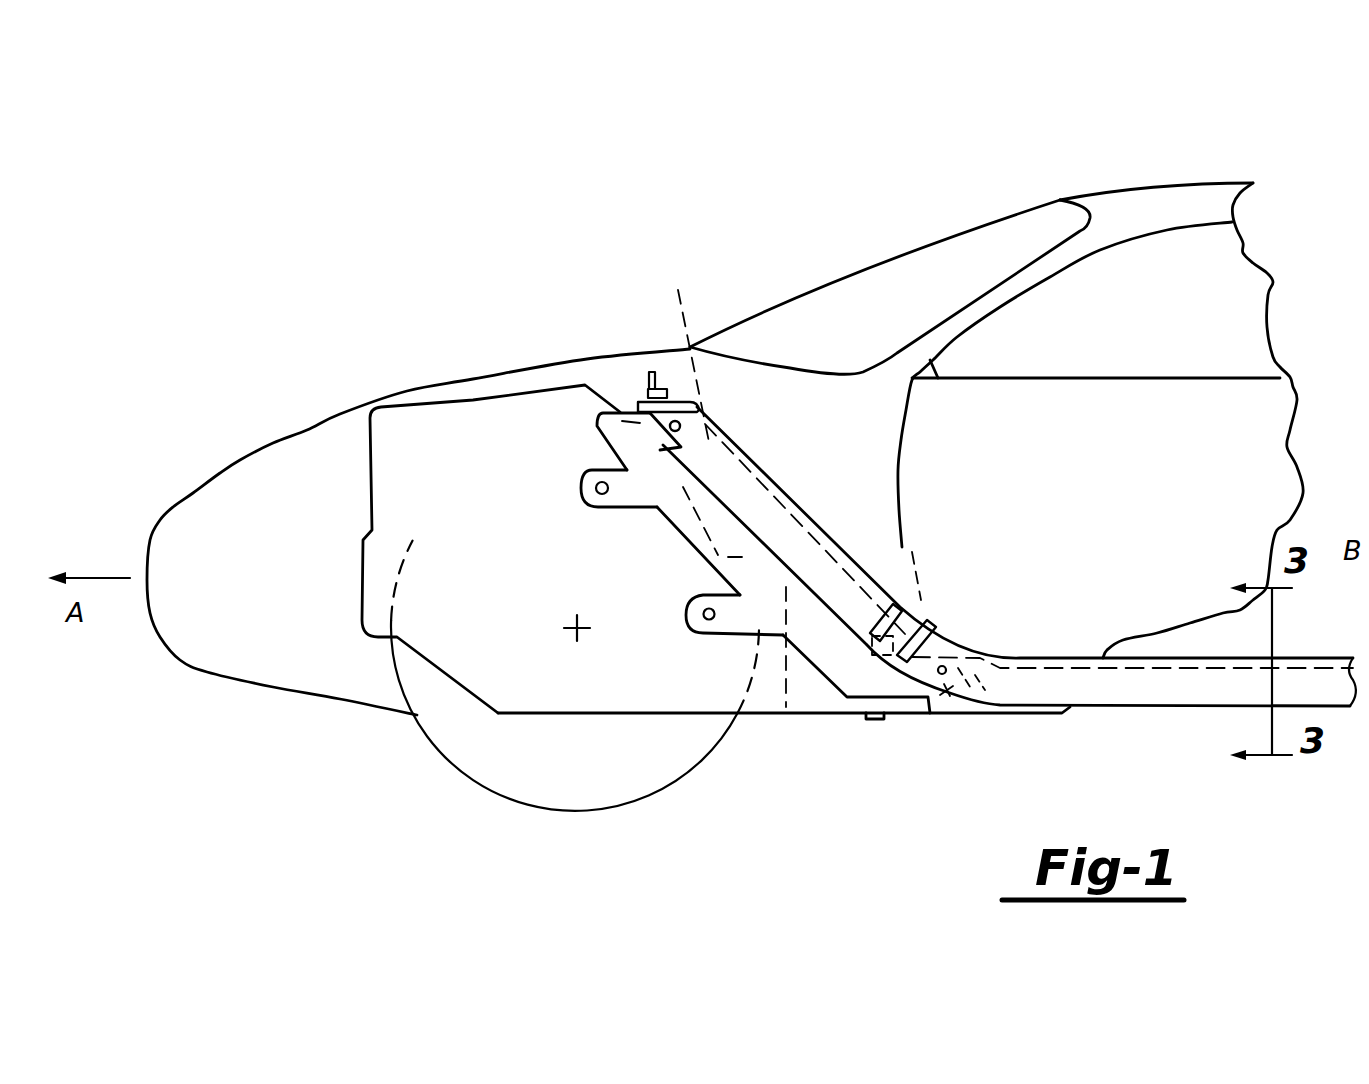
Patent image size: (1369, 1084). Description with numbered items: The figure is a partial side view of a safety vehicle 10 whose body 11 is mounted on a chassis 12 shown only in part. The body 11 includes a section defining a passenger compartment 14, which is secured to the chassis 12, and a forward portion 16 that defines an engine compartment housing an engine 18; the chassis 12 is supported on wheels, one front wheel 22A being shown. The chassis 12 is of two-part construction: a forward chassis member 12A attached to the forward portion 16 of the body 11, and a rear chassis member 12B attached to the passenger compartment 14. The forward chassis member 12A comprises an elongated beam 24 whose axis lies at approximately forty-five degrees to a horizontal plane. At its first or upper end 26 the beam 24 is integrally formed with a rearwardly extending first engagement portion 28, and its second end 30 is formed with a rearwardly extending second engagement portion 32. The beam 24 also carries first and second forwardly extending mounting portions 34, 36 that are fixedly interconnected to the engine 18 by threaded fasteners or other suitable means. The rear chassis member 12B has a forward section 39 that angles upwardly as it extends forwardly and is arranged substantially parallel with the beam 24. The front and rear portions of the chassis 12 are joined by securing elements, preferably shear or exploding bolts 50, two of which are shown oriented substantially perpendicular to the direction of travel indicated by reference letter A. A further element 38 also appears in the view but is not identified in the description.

The safety vehicle 10 is at (262, 308).
The body 11 is at (1156, 160).
The chassis 12 is at (1073, 718).
The forward chassis member 12A is at (818, 680).
The rear chassis member 12B is at (1023, 658).
The passenger compartment 14 is at (1196, 615).
The forward portion 16 is at (212, 518).
The engine 18 is at (436, 427).
The front wheel 22A is at (597, 797).
The elongated beam 24 is at (681, 537).
The first end 26 is at (621, 410).
The first engagement portion 28 is at (696, 351).
The second end 30 is at (928, 699).
The second engagement portion 32 is at (990, 725).
The first mounting portion 34 is at (583, 490).
The second mounting portion 36 is at (713, 633).
The pivot pin 38 is at (601, 482).
The forward section 39 is at (771, 482).
The shear bolts 50 is at (638, 402).